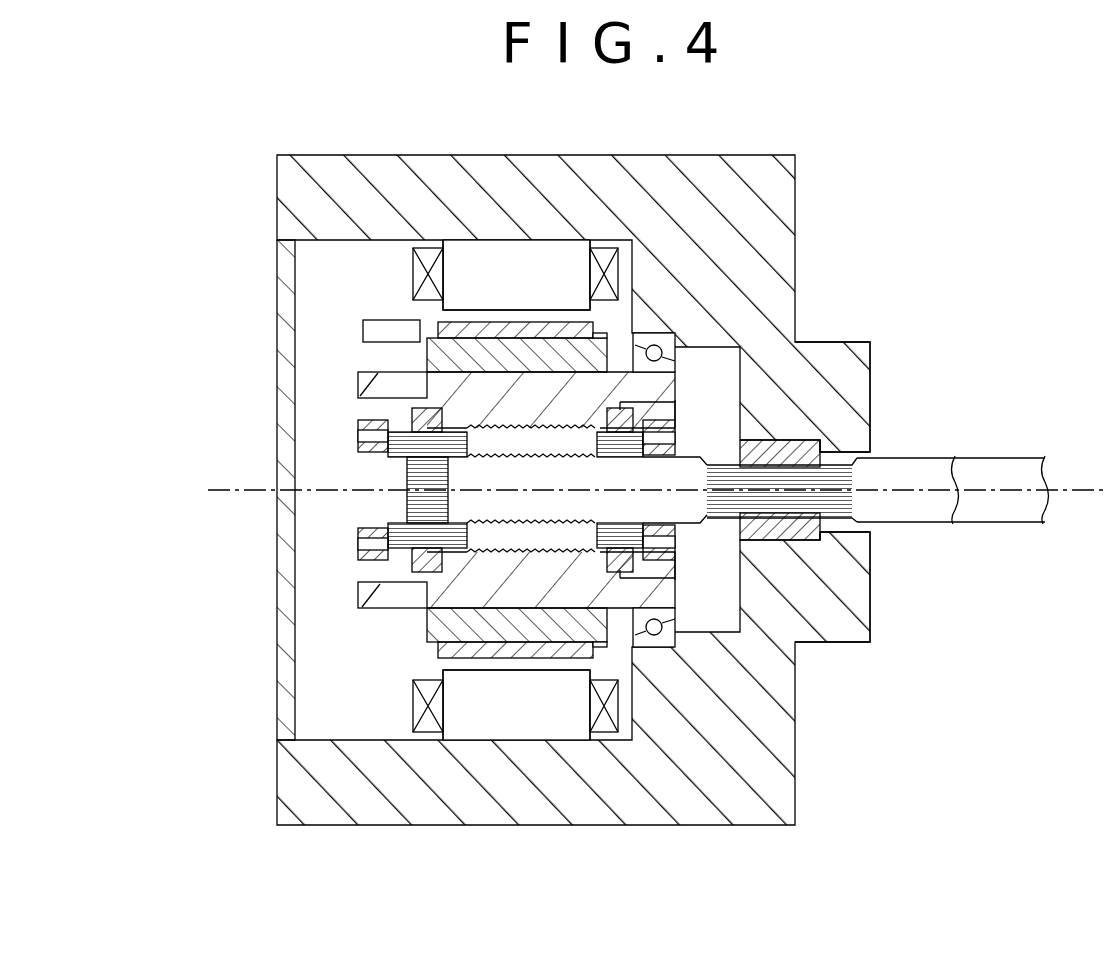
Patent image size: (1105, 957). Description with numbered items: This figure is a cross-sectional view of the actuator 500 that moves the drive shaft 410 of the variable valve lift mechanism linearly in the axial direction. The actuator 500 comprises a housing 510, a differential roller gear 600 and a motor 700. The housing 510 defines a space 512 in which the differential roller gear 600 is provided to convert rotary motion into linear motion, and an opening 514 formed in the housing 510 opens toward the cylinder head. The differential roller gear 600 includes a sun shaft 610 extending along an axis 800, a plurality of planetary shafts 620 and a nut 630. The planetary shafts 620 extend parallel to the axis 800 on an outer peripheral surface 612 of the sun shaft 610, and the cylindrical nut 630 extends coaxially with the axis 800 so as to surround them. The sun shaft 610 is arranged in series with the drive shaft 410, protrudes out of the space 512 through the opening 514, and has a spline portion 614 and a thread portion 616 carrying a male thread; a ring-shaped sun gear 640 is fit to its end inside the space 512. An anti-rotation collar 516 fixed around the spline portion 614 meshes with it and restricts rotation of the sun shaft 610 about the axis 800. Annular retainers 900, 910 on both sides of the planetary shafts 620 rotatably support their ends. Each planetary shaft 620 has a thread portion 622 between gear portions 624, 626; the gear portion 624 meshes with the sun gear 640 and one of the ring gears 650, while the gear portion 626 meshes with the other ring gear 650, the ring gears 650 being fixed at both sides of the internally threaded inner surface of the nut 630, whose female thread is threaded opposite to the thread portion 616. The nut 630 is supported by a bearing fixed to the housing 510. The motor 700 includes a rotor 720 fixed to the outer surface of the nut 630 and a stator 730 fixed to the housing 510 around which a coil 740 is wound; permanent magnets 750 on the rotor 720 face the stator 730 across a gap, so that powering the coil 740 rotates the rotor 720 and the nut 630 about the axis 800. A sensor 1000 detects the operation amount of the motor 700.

The drive shaft 410 is at (1020, 458).
The actuator 500 is at (230, 162).
The housing 510 is at (312, 803).
The space 512 is at (315, 700).
The opening 514 is at (870, 470).
The anti-rotation collar 516 is at (807, 538).
The differential roller gear 600 is at (455, 510).
The sun shaft 610 is at (768, 680).
The outer peripheral surface 612 is at (705, 536).
The spline portion 614 is at (843, 525).
The thread portion 616 is at (562, 600).
The planetary shafts 620 is at (528, 560).
The thread portion 622 is at (573, 428).
The gear portion 624 is at (414, 412).
The gear portion 626 is at (620, 407).
The nut 630 is at (556, 620).
The sun gear 640 is at (407, 478).
The ring gears 650 is at (425, 574).
The motor 700 is at (494, 511).
The rotor 720 is at (412, 690).
The stator 730 is at (467, 722).
The coil 740 is at (605, 253).
The permanent magnets 750 is at (515, 325).
The axis 800 is at (212, 491).
The retainer 900 is at (358, 432).
The retainer 910 is at (678, 422).
The sensor 1000 is at (363, 331).